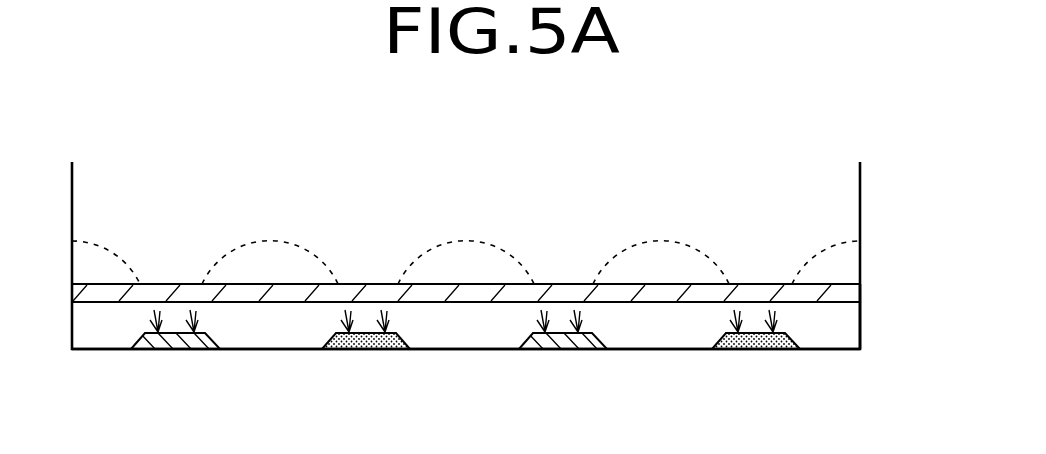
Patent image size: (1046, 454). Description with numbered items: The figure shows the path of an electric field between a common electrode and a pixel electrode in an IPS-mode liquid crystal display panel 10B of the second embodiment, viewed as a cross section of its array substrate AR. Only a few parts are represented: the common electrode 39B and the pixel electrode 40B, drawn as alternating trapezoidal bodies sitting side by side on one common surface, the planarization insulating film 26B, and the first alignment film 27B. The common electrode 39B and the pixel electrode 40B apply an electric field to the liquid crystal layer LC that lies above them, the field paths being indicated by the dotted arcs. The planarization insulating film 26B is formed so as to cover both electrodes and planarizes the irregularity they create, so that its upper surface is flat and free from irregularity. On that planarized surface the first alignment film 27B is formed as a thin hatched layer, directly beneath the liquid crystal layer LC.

The liquid crystal display panel 10B is at (170, 159).
The liquid crystal layer LC is at (813, 203).
The array substrate AR is at (876, 306).
The planarization insulating film 26B is at (468, 322).
The first alignment film 27B is at (663, 292).
The common electrode 39B is at (175, 349).
The pixel electrode 40B is at (367, 349).